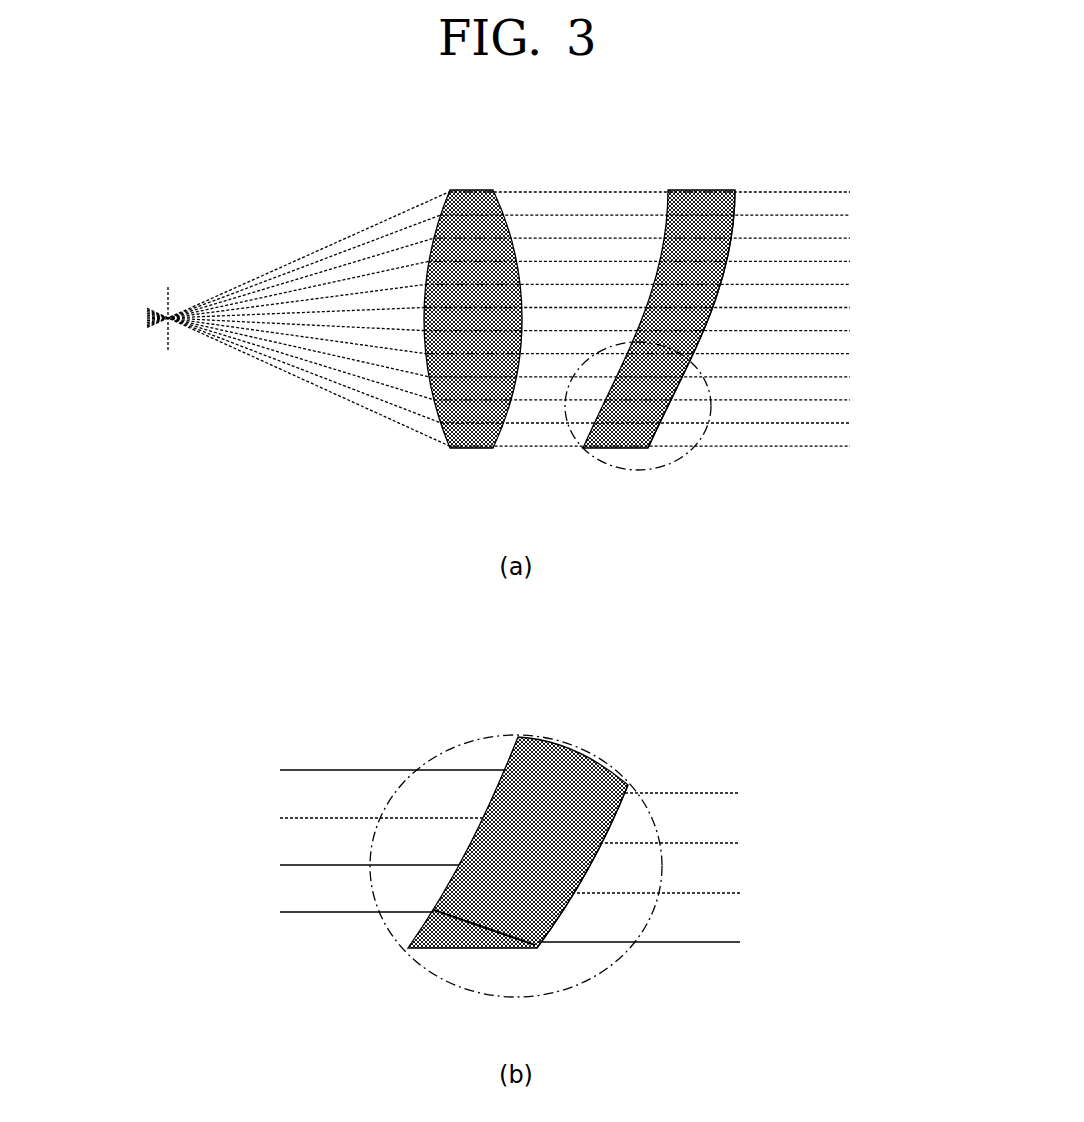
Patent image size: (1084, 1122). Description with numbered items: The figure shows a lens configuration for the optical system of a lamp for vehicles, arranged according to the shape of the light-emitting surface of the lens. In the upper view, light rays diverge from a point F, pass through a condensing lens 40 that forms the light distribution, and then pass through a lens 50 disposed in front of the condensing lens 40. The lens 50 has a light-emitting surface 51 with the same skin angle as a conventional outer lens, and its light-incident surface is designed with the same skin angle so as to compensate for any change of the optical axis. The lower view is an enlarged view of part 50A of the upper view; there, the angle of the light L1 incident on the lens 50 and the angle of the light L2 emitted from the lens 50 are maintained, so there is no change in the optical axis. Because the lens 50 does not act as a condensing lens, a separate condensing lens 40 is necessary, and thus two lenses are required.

The condensing lens 40 is at (458, 188).
The lens 50 is at (690, 198).
The light-emitting surface 51 is at (736, 205).
The part 50A is at (687, 452).
The focal point F is at (168, 336).
The light incident on the lens L1 is at (337, 913).
The light emitted from the lens L2 is at (675, 945).